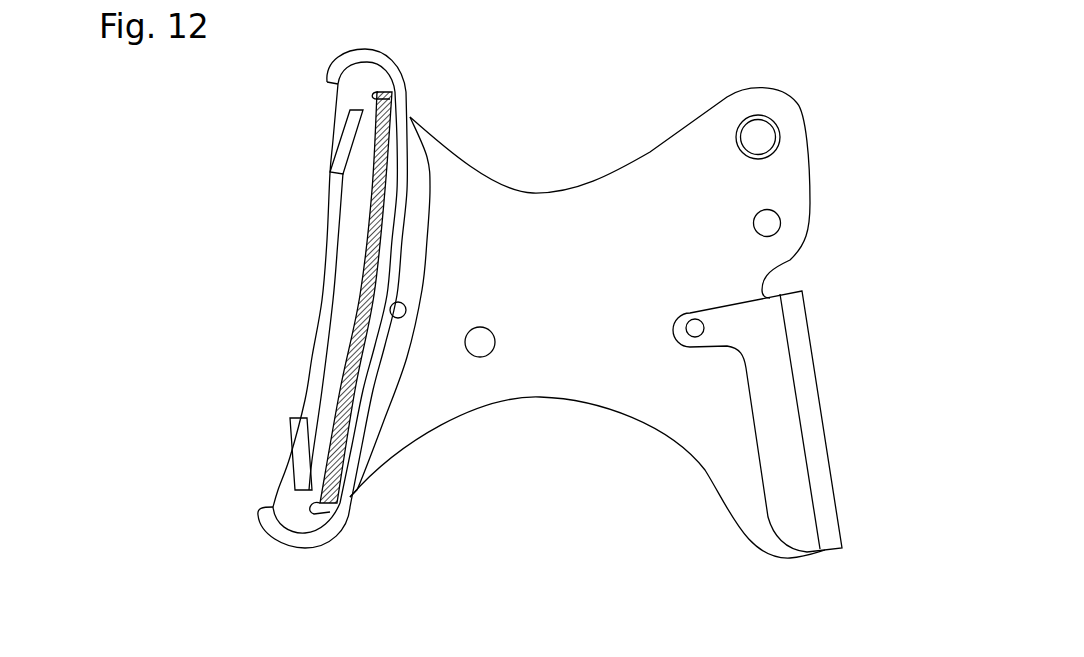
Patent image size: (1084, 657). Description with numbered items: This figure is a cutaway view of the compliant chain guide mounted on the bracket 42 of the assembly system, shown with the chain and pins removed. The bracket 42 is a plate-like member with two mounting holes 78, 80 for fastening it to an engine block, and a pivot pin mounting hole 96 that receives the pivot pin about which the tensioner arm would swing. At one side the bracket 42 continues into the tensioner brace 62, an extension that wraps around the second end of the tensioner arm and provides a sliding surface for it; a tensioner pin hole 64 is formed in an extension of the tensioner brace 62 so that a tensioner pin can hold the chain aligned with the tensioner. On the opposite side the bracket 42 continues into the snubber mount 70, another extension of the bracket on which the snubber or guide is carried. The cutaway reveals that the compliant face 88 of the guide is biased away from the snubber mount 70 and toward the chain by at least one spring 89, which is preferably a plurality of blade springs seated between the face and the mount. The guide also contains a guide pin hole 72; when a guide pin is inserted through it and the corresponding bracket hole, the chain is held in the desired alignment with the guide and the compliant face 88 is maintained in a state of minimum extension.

The bracket 42 is at (603, 321).
The tensioner brace 62 is at (771, 345).
The tensioner pin hole 64 is at (697, 327).
The snubber mount 70 is at (330, 297).
The guide pin hole 72 is at (400, 306).
The mounting hole 78 is at (482, 343).
The mounting hole 80 is at (767, 223).
The compliant face 88 is at (383, 337).
The spring 89 is at (372, 262).
The pivot pin mounting hole 96 is at (758, 137).